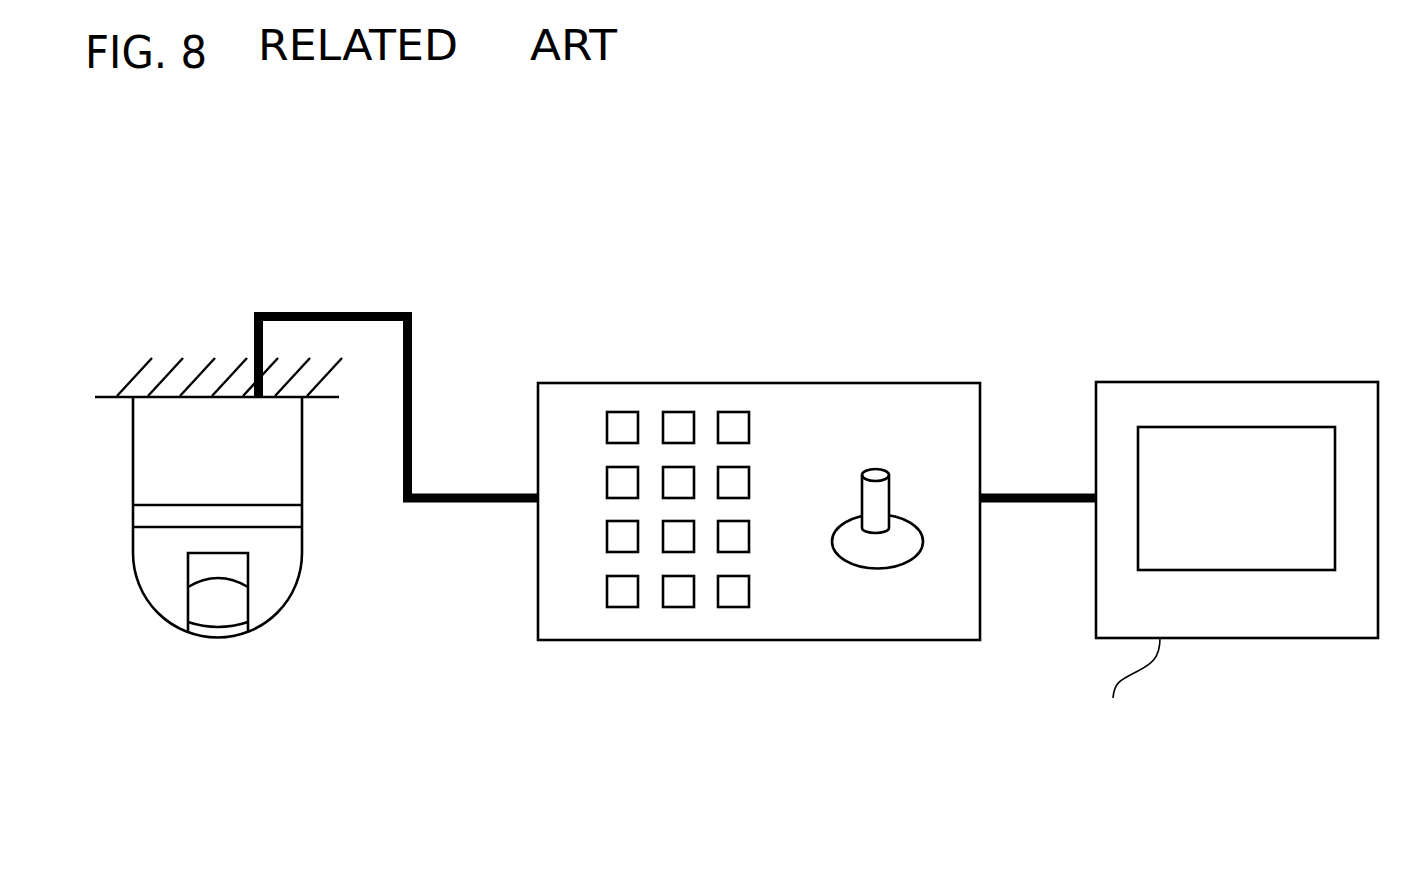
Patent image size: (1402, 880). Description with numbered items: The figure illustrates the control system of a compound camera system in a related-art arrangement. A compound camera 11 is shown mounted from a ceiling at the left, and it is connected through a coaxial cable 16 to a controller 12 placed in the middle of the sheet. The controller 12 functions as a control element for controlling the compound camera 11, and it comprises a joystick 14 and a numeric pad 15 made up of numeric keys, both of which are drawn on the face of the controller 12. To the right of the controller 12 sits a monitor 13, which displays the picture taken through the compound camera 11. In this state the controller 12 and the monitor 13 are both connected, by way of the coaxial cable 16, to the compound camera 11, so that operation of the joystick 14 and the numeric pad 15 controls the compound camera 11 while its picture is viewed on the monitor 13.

The compound camera 11 is at (218, 474).
The controller 12 is at (759, 488).
The monitor 13 is at (1225, 534).
The joystick 14 is at (889, 493).
The numeric pad 15 is at (750, 429).
The coaxial cable 16 is at (678, 382).